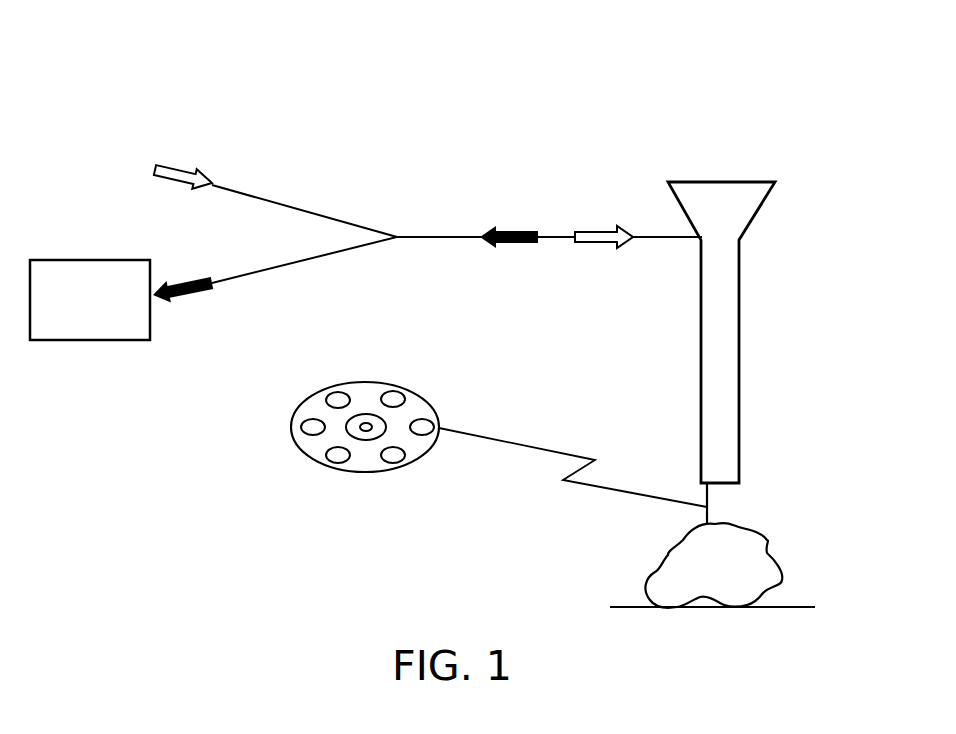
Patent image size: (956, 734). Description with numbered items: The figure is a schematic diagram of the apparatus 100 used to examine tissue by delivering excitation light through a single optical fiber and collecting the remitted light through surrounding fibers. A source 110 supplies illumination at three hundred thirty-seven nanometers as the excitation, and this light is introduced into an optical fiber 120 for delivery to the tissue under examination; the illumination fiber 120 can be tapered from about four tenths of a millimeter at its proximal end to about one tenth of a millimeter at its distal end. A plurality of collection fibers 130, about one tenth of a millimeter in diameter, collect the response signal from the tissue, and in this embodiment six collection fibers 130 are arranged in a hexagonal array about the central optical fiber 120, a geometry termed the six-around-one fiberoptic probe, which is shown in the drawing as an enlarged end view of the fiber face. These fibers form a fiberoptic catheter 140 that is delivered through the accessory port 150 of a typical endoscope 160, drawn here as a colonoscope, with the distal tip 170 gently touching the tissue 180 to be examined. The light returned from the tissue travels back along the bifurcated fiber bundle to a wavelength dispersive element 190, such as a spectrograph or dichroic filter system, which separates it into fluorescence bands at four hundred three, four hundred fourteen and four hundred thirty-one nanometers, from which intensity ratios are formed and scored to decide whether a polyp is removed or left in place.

The apparatus 100 is at (592, 55).
The source of 337 nm illumination 110 is at (148, 166).
The optical fiber 120 is at (660, 238).
The collection fibers 130 is at (338, 463).
The fiberoptic catheter 140 is at (367, 423).
The accessory port 150 is at (696, 248).
The endoscope 160 is at (739, 331).
The distal tip 170 is at (739, 484).
The tissue 180 is at (782, 568).
The wavelength dispersive element 190 is at (140, 340).